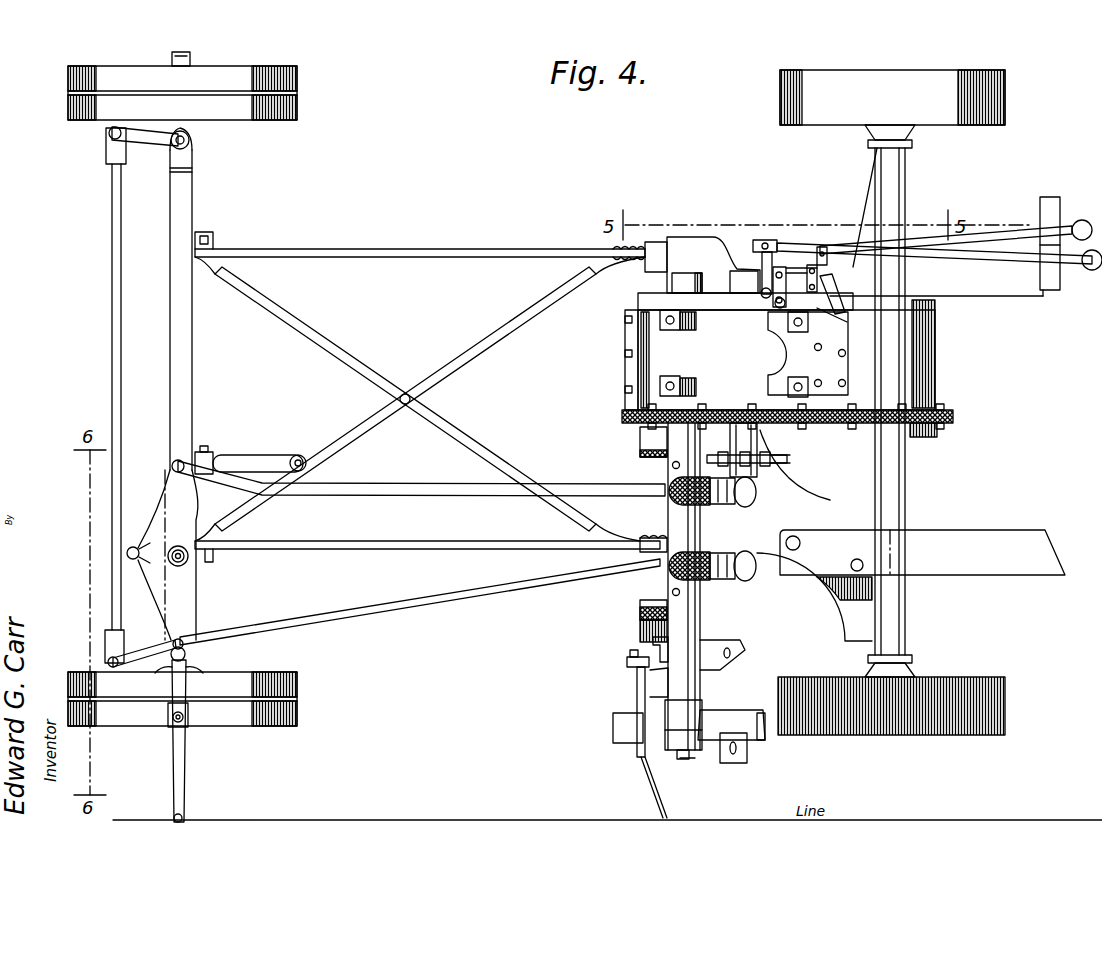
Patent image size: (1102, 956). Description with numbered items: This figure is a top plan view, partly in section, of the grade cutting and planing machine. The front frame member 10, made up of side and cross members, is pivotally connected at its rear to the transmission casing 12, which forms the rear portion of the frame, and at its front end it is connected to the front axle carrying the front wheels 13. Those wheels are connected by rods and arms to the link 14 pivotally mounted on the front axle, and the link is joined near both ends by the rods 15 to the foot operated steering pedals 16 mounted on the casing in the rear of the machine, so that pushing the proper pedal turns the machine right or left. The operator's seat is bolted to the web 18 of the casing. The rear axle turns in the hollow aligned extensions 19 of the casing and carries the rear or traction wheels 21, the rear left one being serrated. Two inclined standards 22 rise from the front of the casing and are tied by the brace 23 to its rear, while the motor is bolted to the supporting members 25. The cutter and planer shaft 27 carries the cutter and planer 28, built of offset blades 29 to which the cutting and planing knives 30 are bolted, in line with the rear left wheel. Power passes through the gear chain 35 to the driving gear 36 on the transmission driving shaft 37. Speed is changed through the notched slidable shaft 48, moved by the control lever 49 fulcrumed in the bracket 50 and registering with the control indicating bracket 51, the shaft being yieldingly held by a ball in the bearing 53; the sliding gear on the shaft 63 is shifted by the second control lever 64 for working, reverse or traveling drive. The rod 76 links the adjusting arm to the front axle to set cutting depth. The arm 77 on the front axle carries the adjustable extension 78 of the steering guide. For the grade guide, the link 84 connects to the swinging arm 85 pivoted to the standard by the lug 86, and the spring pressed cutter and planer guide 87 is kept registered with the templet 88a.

The front frame member 10 is at (437, 253).
The transmission casing 12 is at (645, 372).
The front wheels 13 is at (298, 113).
The link 14 is at (178, 604).
The rods 15 is at (360, 497).
The foot operated steering pedals 16 is at (748, 498).
The web 18 is at (855, 502).
The hollow aligned extensions 19 is at (905, 173).
The rear or traction wheels 21 is at (1005, 112).
The standards 22 is at (645, 455).
The brace 23 is at (930, 410).
The supporting members 25 is at (790, 386).
The cutter and planer shaft 27 is at (682, 760).
The cutter and planer 28 is at (742, 745).
The blades 29 is at (762, 740).
The cutting and planing knives 30 is at (615, 730).
The gear chain 35 is at (800, 472).
The driving gear 36 is at (785, 470).
The transmission driving shaft 37 is at (770, 482).
The slidable shaft 48 is at (786, 268).
The control lever 49 is at (1003, 238).
The bracket 50 is at (843, 310).
The control indicating bracket 51 is at (1048, 300).
The bearing 53 is at (773, 315).
The shaft 63 is at (760, 252).
The control lever 64 is at (1006, 264).
The rod 76 is at (268, 463).
The arm 77 is at (176, 686).
The adjustable extension 78 is at (186, 761).
The link 84 is at (627, 661).
The swinging arm 85 is at (653, 653).
The lug 86 is at (657, 641).
The cutter and planer guide 87 is at (640, 782).
The templet 88a is at (740, 820).